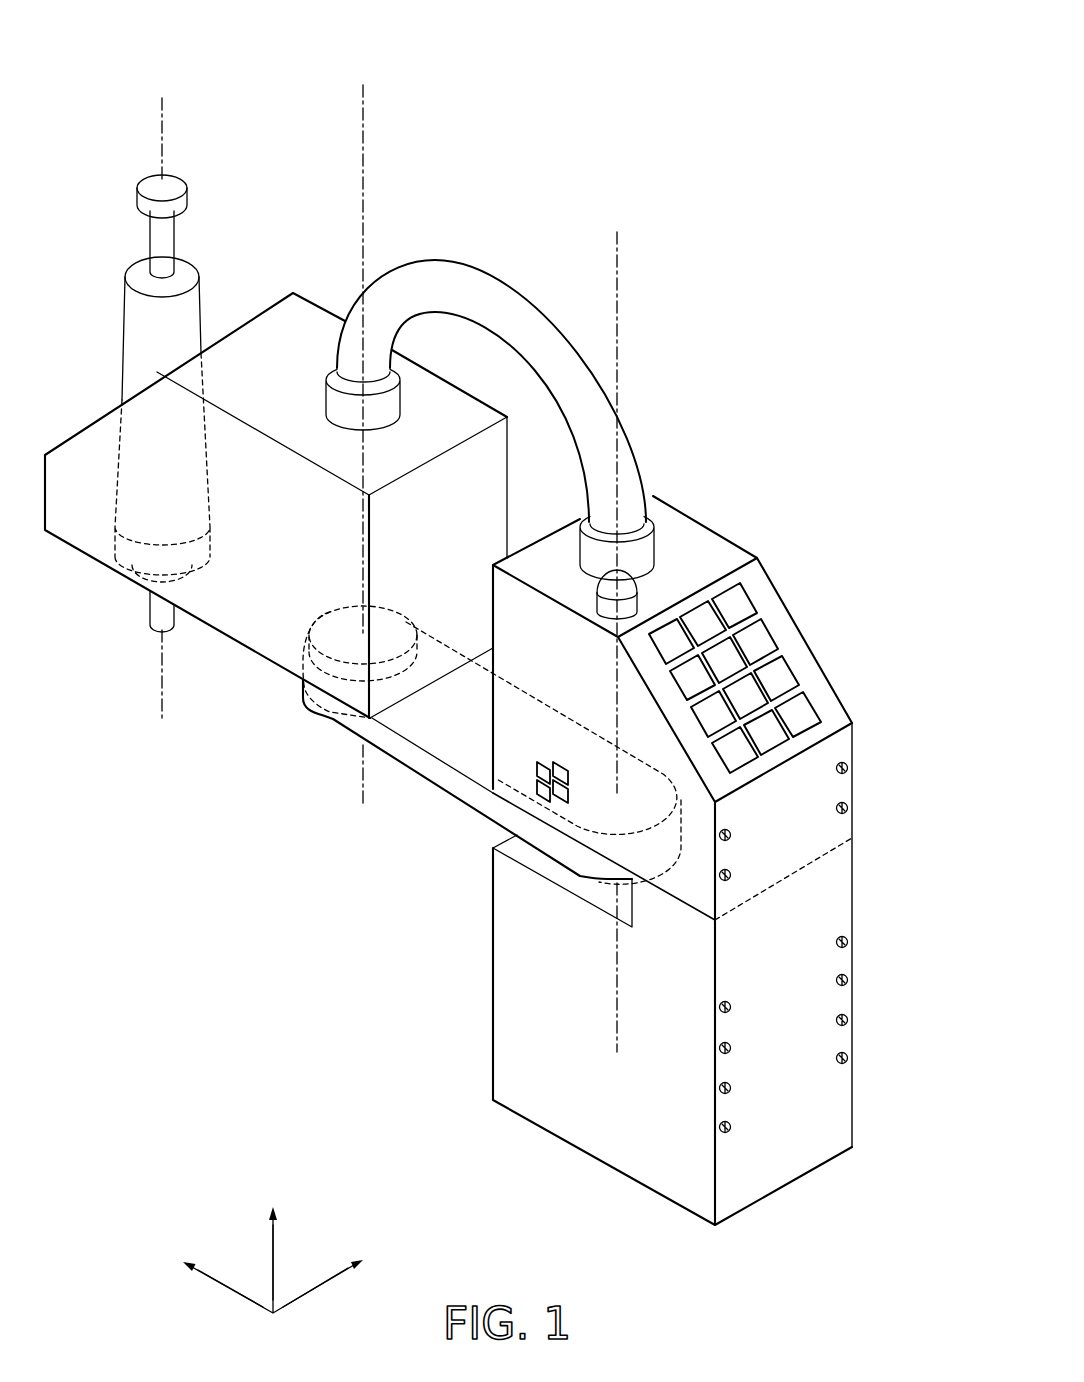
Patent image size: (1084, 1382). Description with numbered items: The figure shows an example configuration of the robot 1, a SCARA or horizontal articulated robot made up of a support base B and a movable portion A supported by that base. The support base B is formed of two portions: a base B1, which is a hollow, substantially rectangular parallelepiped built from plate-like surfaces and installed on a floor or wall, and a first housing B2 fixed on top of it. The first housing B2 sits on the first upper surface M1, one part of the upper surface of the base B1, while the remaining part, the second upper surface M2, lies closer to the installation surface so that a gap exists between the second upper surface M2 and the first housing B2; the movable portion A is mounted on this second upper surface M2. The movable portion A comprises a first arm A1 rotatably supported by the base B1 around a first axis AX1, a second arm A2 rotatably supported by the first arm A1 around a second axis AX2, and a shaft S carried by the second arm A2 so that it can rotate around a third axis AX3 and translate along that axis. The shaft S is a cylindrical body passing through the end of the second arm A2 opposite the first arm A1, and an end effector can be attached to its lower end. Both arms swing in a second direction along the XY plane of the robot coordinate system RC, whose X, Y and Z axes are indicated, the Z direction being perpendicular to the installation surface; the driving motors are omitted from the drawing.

The robot 1 is at (103, 72).
The movable portion A is at (292, 738).
The first arm A1 is at (433, 786).
The second arm A2 is at (260, 655).
The shaft S is at (178, 229).
The support base B is at (872, 815).
The base B1 is at (848, 913).
The first housing B2 is at (853, 748).
The first upper surface M1 is at (826, 861).
The second upper surface M2 is at (552, 869).
The first axis AX1 is at (618, 252).
The second axis AX2 is at (364, 102).
The third axis AX3 is at (162, 131).
The robot coordinate system RC is at (274, 1246).
The X axis X is at (286, 1284).
The Y axis Y is at (213, 1276).
The Z axis Z is at (273, 1240).